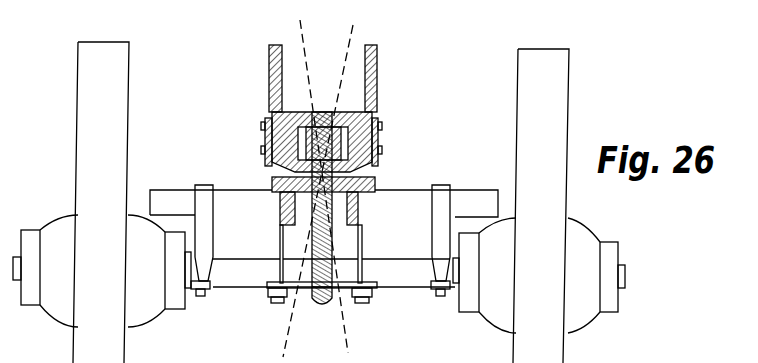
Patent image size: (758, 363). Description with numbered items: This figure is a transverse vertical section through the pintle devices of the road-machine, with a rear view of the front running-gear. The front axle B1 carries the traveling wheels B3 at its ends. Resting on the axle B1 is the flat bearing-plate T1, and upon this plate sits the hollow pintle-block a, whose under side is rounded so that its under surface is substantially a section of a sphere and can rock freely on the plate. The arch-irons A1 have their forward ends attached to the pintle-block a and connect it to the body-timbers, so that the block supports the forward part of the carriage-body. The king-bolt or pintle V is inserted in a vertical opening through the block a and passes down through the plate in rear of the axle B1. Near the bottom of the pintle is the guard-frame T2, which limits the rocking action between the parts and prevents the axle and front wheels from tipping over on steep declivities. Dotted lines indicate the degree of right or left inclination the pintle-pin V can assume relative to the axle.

The arch-irons A1 is at (326, 73).
The pintle-block a is at (372, 138).
The king-bolt or pintle V is at (318, 188).
The bearing-plate T1 is at (270, 182).
The guard-frame T2 is at (345, 288).
The front axle B1 is at (324, 244).
The traveling wheels B3 is at (319, 202).